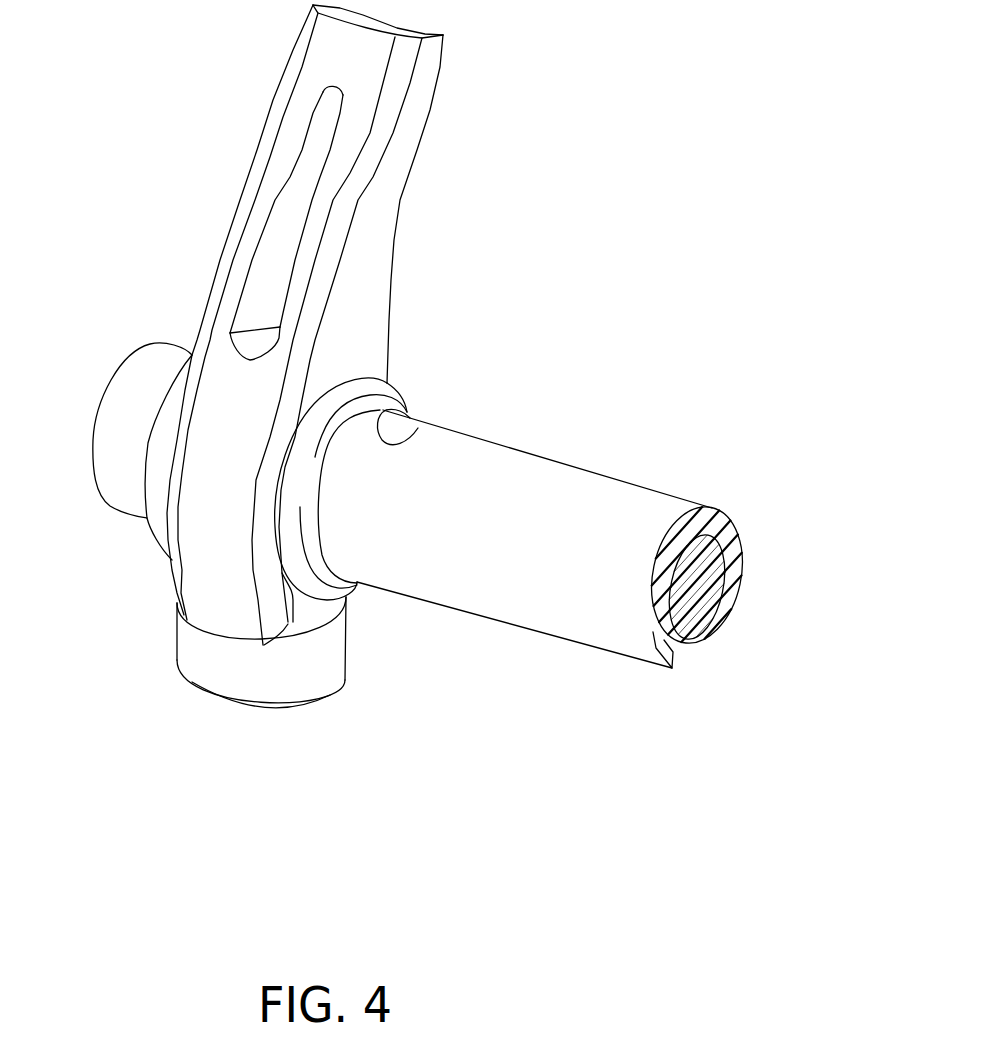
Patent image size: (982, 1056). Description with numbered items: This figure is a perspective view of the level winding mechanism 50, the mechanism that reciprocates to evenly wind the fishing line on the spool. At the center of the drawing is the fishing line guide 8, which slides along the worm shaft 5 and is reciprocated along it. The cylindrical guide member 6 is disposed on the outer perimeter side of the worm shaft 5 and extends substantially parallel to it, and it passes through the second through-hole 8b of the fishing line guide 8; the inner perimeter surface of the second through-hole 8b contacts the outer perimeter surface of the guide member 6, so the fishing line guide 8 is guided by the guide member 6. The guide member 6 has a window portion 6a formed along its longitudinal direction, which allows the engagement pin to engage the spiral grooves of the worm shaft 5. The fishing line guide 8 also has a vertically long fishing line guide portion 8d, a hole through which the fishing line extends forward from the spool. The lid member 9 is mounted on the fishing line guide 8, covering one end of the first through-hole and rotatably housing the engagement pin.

The level winding mechanism 50 is at (598, 147).
The fishing line guide 8 is at (427, 147).
The fishing line guide portion 8d is at (283, 226).
The second through-hole 8b is at (418, 428).
The lid member 9 is at (265, 660).
The guide member 6 is at (598, 466).
The worm shaft 5 is at (741, 545).
The window portion 6a is at (672, 667).